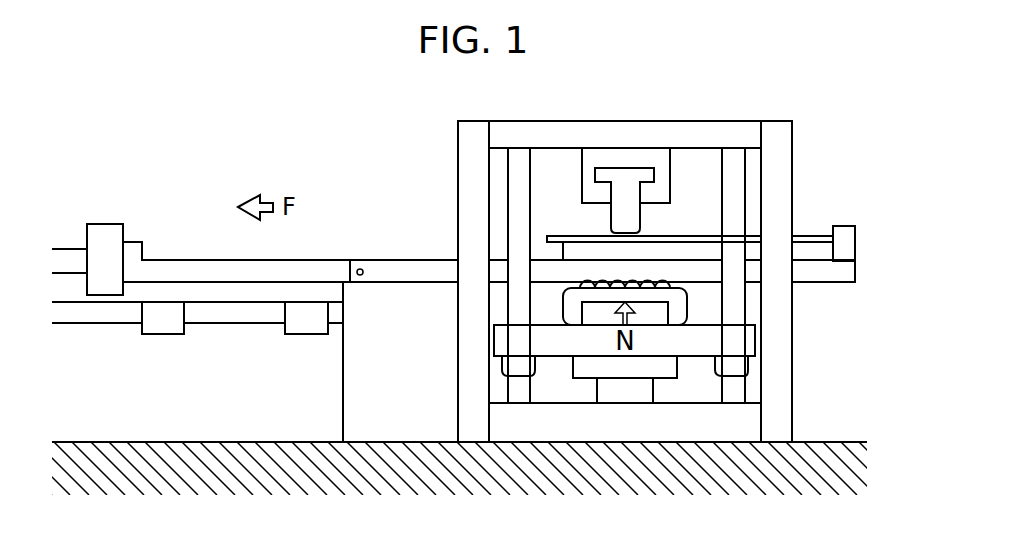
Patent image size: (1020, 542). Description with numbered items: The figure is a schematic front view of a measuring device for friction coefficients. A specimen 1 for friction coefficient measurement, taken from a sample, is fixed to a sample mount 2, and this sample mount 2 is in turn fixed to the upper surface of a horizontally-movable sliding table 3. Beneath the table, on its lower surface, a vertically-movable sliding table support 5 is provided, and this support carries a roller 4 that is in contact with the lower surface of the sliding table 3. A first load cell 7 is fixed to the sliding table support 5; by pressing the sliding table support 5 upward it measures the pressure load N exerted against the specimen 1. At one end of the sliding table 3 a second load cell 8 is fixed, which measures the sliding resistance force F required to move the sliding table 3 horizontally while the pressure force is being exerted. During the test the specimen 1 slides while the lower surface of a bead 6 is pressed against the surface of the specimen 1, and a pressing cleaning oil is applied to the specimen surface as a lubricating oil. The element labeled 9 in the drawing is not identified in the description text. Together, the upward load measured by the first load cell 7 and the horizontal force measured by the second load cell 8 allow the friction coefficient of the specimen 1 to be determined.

The specimen 1 is at (693, 233).
The sample mount 2 is at (819, 250).
The sliding table 3 is at (828, 272).
The roller 4 is at (663, 293).
The sliding table support 5 is at (503, 340).
The bead 6 is at (635, 218).
The first load cell 7 is at (662, 367).
The second load cell 8 is at (104, 238).
The guide rail 9 is at (237, 317).